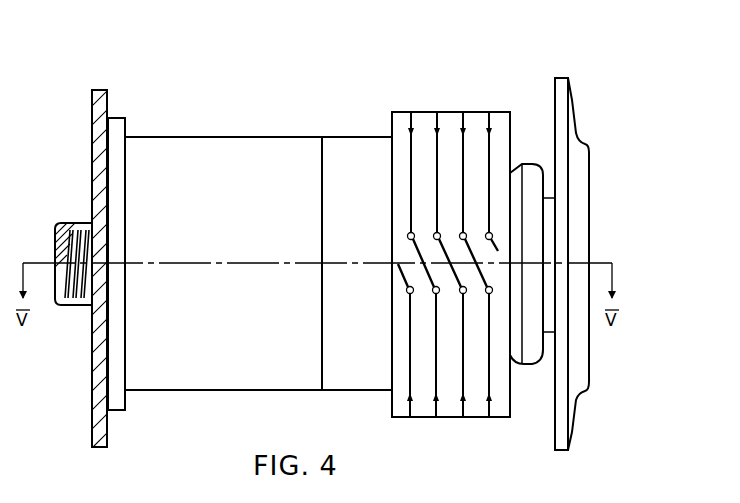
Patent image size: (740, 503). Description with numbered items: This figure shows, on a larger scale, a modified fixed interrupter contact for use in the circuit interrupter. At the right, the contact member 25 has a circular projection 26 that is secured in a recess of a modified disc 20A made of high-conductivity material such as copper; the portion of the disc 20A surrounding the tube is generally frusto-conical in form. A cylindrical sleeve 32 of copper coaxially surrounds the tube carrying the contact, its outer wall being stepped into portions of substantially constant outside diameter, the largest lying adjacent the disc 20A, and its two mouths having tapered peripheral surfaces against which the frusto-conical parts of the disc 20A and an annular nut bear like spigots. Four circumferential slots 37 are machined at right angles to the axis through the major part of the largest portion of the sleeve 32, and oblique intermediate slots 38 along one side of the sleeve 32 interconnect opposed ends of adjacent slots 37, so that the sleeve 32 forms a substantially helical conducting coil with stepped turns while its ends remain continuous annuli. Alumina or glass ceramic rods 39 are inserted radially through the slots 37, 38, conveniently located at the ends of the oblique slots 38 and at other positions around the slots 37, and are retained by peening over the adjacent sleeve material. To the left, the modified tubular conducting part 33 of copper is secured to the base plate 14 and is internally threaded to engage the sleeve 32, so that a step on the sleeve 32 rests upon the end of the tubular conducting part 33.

The base plate 14 is at (96, 137).
The tubular conducting part 33 is at (190, 193).
The cylindrical sleeve 32 is at (388, 124).
The circumferential slots 37 is at (463, 110).
The oblique intermediate slots 38 is at (433, 238).
The ceramic rods 39 is at (433, 292).
The modified disc 20A is at (531, 366).
The circular projection 26 is at (548, 212).
The contact member 25 is at (562, 76).